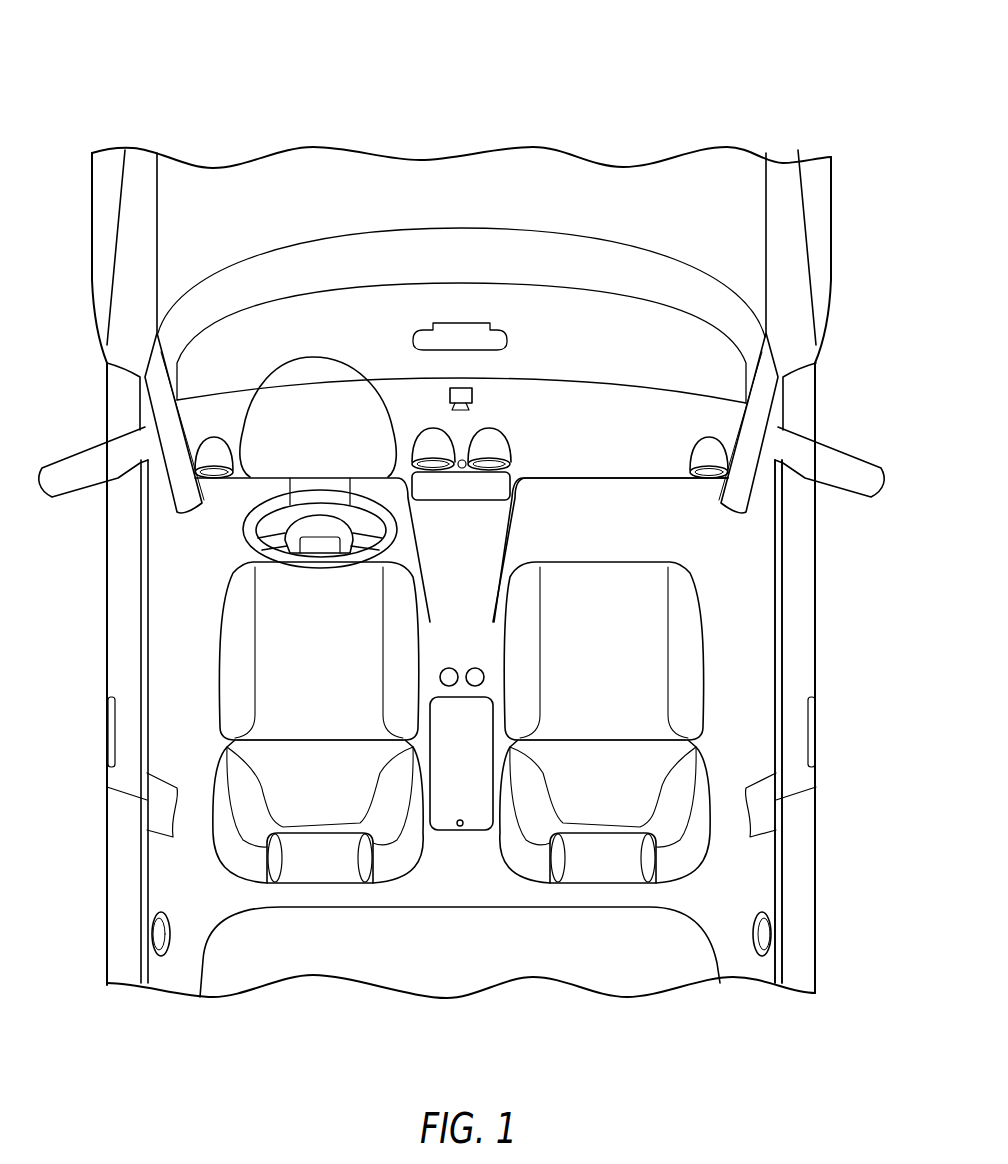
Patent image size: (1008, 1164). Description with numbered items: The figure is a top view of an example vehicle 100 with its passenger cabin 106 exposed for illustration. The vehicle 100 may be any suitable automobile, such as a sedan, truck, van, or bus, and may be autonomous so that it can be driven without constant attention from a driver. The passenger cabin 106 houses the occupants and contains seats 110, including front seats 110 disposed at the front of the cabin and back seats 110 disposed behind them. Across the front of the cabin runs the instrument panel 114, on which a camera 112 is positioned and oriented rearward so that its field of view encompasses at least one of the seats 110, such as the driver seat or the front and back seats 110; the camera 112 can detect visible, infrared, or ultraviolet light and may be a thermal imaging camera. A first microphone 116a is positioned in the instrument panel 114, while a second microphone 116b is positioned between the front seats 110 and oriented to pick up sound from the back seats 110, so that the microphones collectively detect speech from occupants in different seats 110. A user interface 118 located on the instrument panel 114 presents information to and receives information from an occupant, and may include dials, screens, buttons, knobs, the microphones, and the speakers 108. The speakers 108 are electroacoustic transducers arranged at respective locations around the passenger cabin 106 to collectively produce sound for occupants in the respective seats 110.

The vehicle 100 is at (643, 70).
The passenger cabin 106 is at (738, 618).
The speakers 108 is at (213, 480).
The seats 110 is at (393, 855).
The camera 112 is at (473, 395).
The instrument panel 114 is at (658, 417).
The first microphone 116a is at (466, 460).
The second microphone 116b is at (460, 819).
The user interface 118 is at (492, 490).